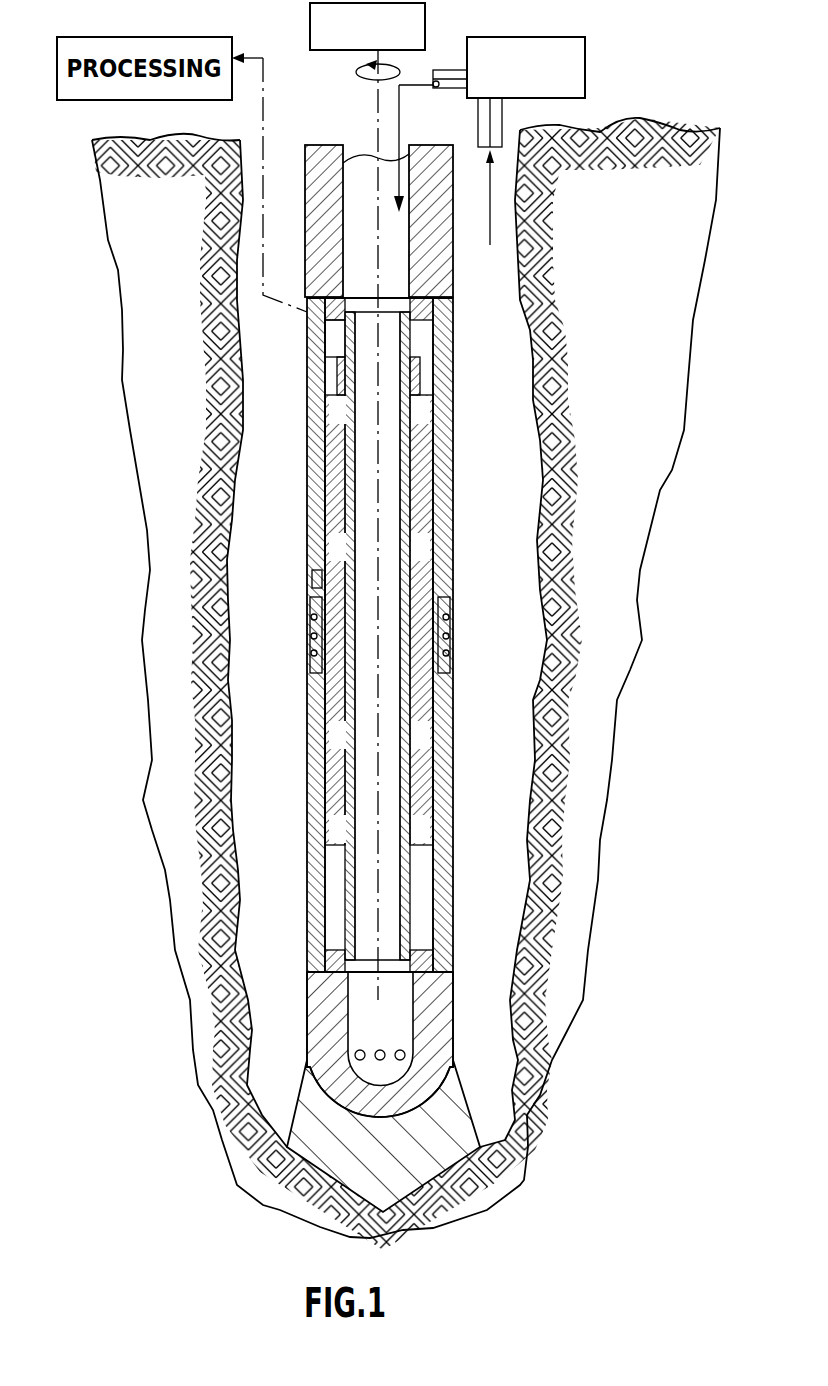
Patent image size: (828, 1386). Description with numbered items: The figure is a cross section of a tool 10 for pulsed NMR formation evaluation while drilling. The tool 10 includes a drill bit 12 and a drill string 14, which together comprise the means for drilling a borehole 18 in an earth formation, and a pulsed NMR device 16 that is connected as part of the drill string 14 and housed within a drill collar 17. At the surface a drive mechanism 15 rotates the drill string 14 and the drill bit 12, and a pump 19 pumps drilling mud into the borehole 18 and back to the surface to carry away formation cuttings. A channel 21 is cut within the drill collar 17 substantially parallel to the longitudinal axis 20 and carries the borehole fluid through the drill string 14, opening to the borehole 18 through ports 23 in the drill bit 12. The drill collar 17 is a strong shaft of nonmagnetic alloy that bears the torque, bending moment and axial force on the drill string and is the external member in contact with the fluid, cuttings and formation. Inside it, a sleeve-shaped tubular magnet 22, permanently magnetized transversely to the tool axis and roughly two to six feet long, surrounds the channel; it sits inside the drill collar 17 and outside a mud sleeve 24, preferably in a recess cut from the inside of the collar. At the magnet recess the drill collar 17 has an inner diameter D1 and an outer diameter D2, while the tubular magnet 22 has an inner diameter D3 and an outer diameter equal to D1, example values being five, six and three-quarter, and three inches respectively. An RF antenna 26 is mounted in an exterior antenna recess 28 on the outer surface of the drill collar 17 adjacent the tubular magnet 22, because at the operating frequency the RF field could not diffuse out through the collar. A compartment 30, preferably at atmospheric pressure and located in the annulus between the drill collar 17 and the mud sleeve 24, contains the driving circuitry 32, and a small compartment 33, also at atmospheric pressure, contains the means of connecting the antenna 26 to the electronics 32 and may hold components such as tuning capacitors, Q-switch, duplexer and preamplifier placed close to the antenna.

The tool 10 is at (636, 418).
The drill bit 12 is at (301, 1098).
The drill string 14 is at (453, 284).
The drive mechanism 15 is at (310, 32).
The pulsed NMR device 16 is at (528, 588).
The drill collar 17 is at (440, 546).
The borehole 18 is at (455, 752).
The pump 19 is at (585, 72).
The longitudinal axis 20 is at (376, 134).
The channel 21 is at (362, 428).
The tubular magnet 22 is at (328, 500).
The ports 23 is at (382, 1048).
The mud sleeve 24 is at (362, 710).
The RF antenna 26 is at (306, 617).
The antenna recess 28 is at (310, 676).
The compartment 30 is at (330, 345).
The circuitry 32 is at (440, 378).
The small compartment 33 is at (312, 576).
The inner diameter of drill collar D1 is at (318, 808).
The outer diameter of drill collar D2 is at (300, 850).
The inner diameter of magnet D3 is at (338, 905).